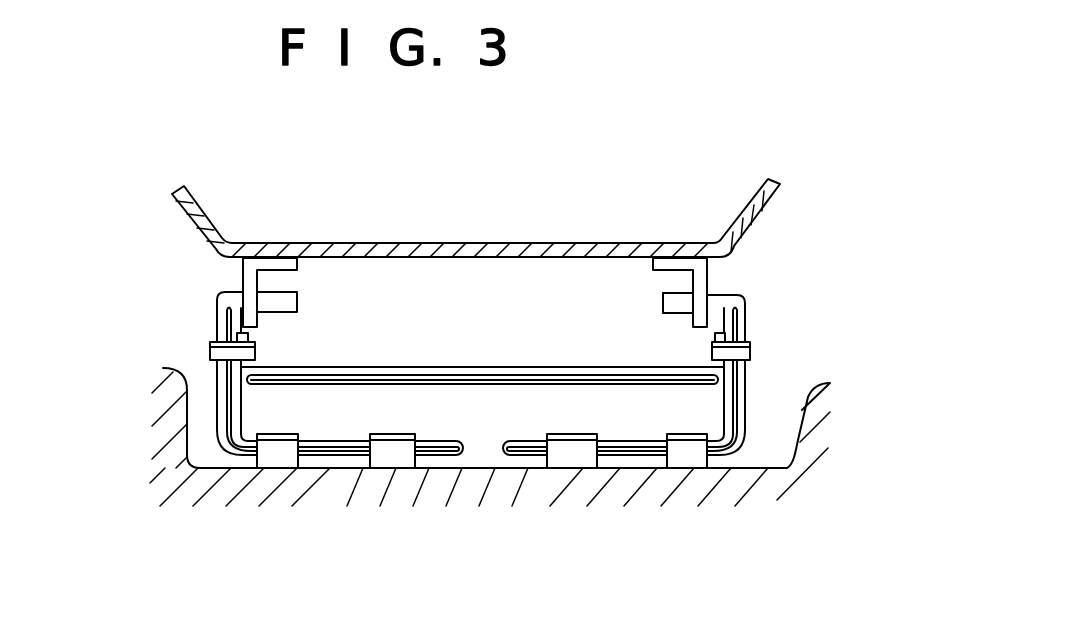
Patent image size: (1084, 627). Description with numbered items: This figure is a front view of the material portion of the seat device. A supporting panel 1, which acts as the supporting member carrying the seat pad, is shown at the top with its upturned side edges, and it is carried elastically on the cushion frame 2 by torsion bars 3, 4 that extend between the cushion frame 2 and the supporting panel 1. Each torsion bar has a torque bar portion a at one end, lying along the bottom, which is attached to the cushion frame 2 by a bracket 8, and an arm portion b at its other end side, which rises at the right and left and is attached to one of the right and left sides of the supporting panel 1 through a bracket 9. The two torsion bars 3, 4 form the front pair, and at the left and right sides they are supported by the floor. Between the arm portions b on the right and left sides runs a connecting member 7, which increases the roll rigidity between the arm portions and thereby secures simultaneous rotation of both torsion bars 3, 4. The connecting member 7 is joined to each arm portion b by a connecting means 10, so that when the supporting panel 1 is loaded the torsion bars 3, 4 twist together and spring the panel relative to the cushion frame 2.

The supporting panel 1 is at (509, 243).
The cushion frame 2 is at (749, 469).
The torsion bar 3 is at (223, 411).
The torsion bar 4 is at (743, 412).
The connecting member 7 is at (512, 380).
The bracket 8 is at (568, 455).
The bracket 9 is at (702, 285).
The connecting means 10 is at (747, 353).
The torque bar portion a is at (633, 453).
The arm portion b is at (738, 324).